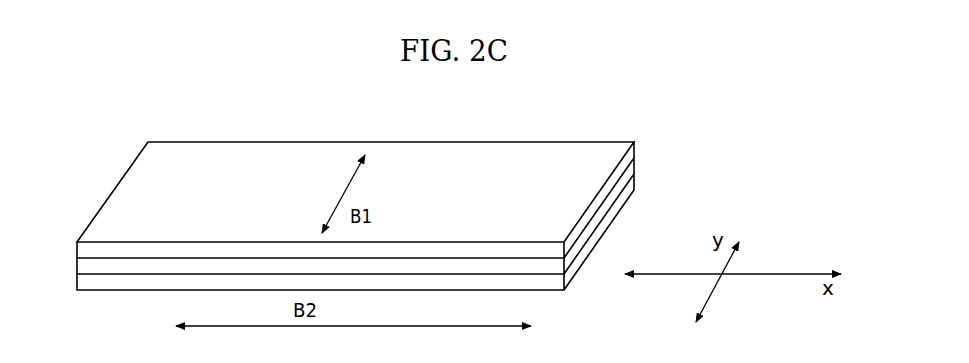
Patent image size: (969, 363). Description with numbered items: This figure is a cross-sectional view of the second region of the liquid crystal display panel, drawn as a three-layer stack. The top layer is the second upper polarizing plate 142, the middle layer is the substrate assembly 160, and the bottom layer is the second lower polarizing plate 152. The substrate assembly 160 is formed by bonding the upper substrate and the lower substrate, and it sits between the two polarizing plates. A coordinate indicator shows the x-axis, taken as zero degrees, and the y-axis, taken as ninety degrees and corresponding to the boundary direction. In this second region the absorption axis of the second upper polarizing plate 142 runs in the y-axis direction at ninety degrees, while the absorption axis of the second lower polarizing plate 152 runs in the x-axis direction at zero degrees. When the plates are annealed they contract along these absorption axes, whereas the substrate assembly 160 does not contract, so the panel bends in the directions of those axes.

The second upper polarizing plate 142 is at (634, 143).
The substrate assembly 160 is at (634, 159).
The second lower polarizing plate 152 is at (634, 176).